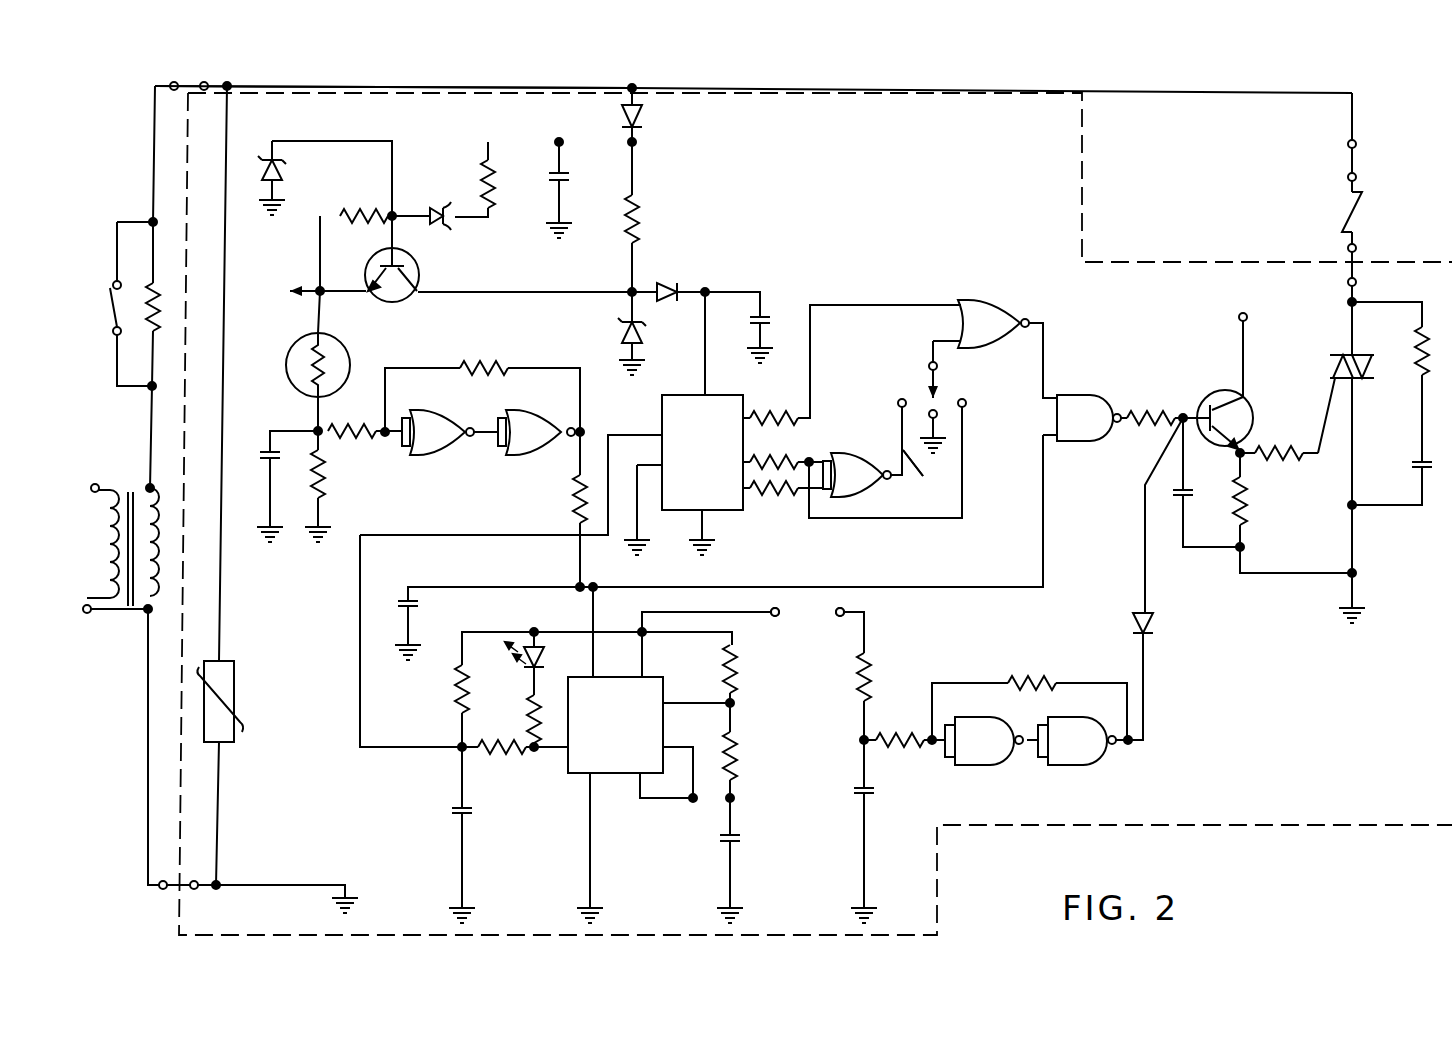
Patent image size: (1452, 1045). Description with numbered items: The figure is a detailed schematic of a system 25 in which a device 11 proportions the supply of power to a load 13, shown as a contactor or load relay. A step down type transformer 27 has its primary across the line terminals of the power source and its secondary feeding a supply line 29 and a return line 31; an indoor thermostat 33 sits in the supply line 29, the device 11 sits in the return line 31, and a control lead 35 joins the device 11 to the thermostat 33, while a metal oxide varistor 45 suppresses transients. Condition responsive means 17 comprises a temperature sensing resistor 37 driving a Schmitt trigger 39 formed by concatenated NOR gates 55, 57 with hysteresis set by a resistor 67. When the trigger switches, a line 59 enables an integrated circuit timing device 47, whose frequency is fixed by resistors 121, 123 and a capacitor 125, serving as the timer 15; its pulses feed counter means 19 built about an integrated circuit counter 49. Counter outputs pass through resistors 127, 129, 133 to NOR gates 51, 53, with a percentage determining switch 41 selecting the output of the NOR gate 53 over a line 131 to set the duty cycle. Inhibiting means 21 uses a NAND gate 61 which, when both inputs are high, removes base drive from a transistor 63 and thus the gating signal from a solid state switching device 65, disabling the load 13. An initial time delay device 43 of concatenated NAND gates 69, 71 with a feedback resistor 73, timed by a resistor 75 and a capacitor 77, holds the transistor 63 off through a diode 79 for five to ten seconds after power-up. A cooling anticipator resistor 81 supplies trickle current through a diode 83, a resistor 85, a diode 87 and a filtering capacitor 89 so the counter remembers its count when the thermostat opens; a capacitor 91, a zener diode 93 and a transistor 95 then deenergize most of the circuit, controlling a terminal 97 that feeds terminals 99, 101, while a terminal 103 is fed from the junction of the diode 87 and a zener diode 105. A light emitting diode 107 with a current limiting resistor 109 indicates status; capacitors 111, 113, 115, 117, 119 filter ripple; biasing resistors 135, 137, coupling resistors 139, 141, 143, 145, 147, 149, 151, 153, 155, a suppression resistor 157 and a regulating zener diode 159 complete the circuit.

The device 11 is at (802, 202).
The load 13 is at (1358, 212).
The timer 15 is at (566, 784).
The condition responsive means 17 is at (413, 346).
The counter means 19 is at (730, 522).
The inhibiting means 21 is at (1140, 332).
The system 25 is at (1374, 152).
The step down type transformer 27 is at (124, 620).
The supply line 29 is at (758, 89).
The return line 31 is at (148, 782).
The indoor thermostat 33 is at (111, 305).
The control lead 35 is at (624, 103).
The temperature sensing resistor 37 is at (288, 360).
The Schmitt trigger 39 is at (477, 460).
The percentage determining switch 41 is at (939, 386).
The initial time delay device 43 is at (1128, 762).
The metal oxide varistor 45 is at (236, 692).
The integrated circuit timing device 47 is at (618, 780).
The integrated circuit counter 49 is at (688, 394).
The NOR gate 51 is at (986, 300).
The NOR gate 53 is at (848, 454).
The NOR gate 55 is at (424, 412).
The NOR gate 57 is at (520, 412).
The line 59 is at (593, 652).
The NAND gate 61 is at (1076, 395).
The transistor 63 is at (1224, 394).
The solid state switching device 65 is at (1330, 360).
The resistor 67 is at (481, 364).
The NAND gate 69 is at (986, 766).
The NAND gate 71 is at (1082, 766).
The feedback resistor 73 is at (1028, 682).
The resistor 75 is at (872, 670).
The capacitor 77 is at (880, 790).
The diode 79 is at (1130, 626).
The cooling anticipator resistor 81 is at (168, 304).
The diode 83 is at (646, 122).
The resistor 85 is at (643, 218).
The diode 87 is at (670, 286).
The filtering capacitor 89 is at (774, 318).
The capacitor 91 is at (569, 180).
The zener diode 93 is at (440, 210).
The transistor 95 is at (418, 266).
The terminal 97 is at (290, 288).
The terminal 99 is at (775, 618).
The terminal 101 is at (840, 616).
The terminal 103 is at (1242, 314).
The zener diode 105 is at (646, 328).
The light emitting diode 107 is at (522, 664).
The current limiting resistor 109 is at (528, 724).
The capacitor 111 is at (264, 455).
The capacitor 113 is at (418, 604).
The capacitor 115 is at (442, 810).
The capacitor 117 is at (1198, 494).
The capacitor 119 is at (1410, 466).
The resistor 121 is at (736, 662).
The resistor 123 is at (724, 762).
The capacitor 125 is at (750, 840).
The resistor 127 is at (778, 413).
The resistor 129 is at (781, 454).
The line 131 is at (926, 474).
The resistor 133 is at (788, 492).
The biasing resistor 135 is at (363, 212).
The biasing resistor 137 is at (328, 470).
The coupling resistor 139 is at (498, 186).
The coupling resistor 141 is at (343, 424).
The coupling resistor 143 is at (574, 481).
The coupling resistor 145 is at (458, 686).
The coupling resistor 147 is at (508, 756).
The coupling resistor 149 is at (890, 732).
The coupling resistor 151 is at (1172, 406).
The coupling resistor 153 is at (1276, 448).
The coupling resistor 155 is at (1253, 498).
The suppression resistor 157 is at (1416, 348).
The zener diode 159 is at (287, 163).